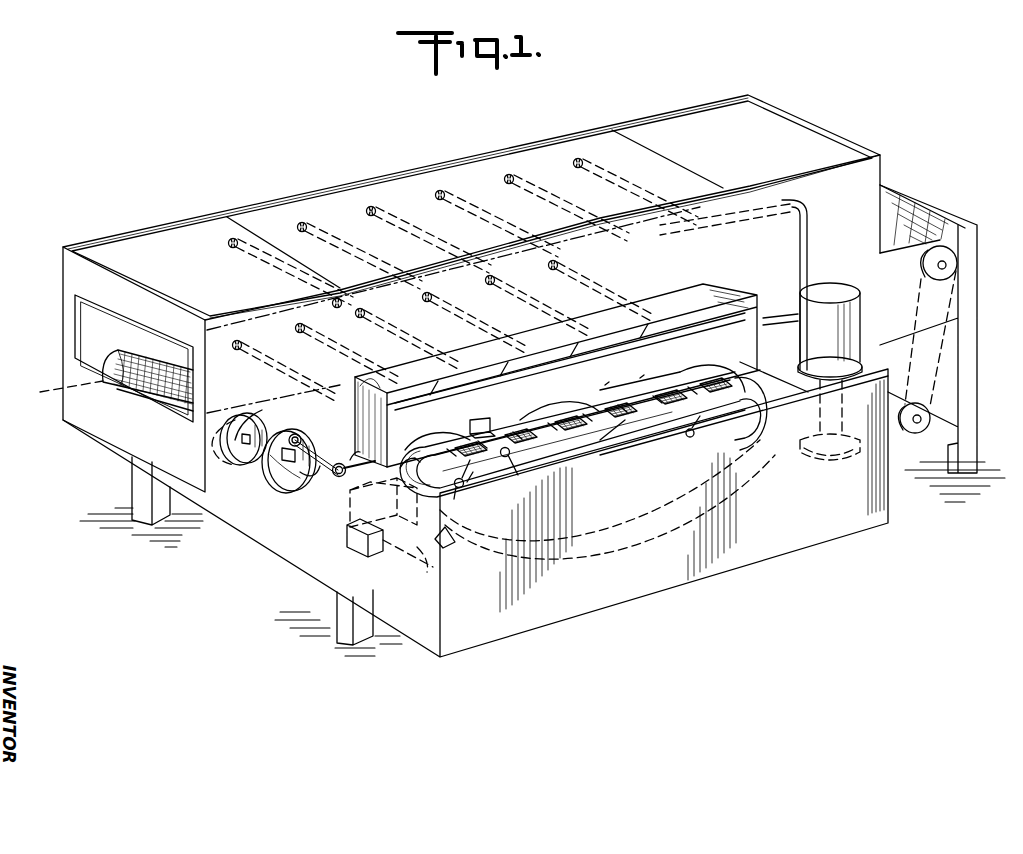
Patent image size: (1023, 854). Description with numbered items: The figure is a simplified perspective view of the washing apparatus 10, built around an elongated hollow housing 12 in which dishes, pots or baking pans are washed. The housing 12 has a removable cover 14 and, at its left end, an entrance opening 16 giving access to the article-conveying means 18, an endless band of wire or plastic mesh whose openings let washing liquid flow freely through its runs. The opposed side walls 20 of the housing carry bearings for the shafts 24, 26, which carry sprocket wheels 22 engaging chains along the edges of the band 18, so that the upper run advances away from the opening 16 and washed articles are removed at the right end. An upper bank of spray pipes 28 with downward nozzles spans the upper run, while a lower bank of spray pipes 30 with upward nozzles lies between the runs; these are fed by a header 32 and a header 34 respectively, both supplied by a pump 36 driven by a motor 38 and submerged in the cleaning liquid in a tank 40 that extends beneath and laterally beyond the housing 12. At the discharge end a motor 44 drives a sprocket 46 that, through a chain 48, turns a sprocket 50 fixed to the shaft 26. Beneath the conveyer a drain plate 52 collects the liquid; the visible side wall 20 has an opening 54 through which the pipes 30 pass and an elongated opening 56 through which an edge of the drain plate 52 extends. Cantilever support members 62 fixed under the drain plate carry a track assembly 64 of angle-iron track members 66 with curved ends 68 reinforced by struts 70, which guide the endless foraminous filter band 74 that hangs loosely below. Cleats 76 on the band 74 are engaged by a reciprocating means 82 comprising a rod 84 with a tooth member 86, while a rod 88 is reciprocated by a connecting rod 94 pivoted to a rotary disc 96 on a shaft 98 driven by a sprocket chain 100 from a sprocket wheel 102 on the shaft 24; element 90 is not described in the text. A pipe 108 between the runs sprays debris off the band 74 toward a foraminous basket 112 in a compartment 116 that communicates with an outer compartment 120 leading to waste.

The apparatus 10 is at (66, 428).
The elongated hollow housing 12 is at (97, 262).
The removable cover 14 is at (408, 204).
The entrance opening 16 is at (78, 314).
The article-conveying means 18 is at (170, 372).
The side walls 20 is at (244, 386).
The sprocket wheels 22 is at (908, 263).
The shaft 24 is at (265, 470).
The shaft 26 is at (950, 258).
The spray pipes 28 is at (593, 165).
The spray pipes 30 is at (272, 368).
The header 32 is at (797, 243).
The header 34 is at (778, 304).
The pump 36 is at (812, 452).
The motor 38 is at (832, 290).
The tank 40 is at (690, 560).
The motor 44 is at (896, 384).
The sprocket 46 is at (928, 416).
The chain 48 is at (935, 358).
The sprocket 50 is at (948, 268).
The drain plate 52 is at (505, 382).
The opening 54 is at (540, 360).
The opening 56 is at (612, 366).
The cantilever support member 62 is at (540, 460).
The track assembly 64 is at (580, 448).
The track members 66 is at (552, 455).
The curved ends 68 is at (730, 412).
The struts 70 is at (490, 525).
The filter band 74 is at (590, 445).
The cleats 76 is at (560, 404).
The reciprocating means 82 is at (338, 490).
The rod 84 is at (440, 440).
The tooth member 86 is at (480, 425).
The rod 88 is at (365, 468).
The pawl 90 is at (412, 470).
The connecting rod 94 is at (330, 455).
The rotary disc 96 is at (318, 485).
The rotary shaft 98 is at (292, 470).
The sprocket chain 100 is at (278, 438).
The sprocket wheel 102 is at (262, 410).
The pipe 108 is at (470, 485).
The foraminous basket 112 is at (340, 478).
The compartment 116 is at (433, 567).
The compartment 120 is at (346, 545).